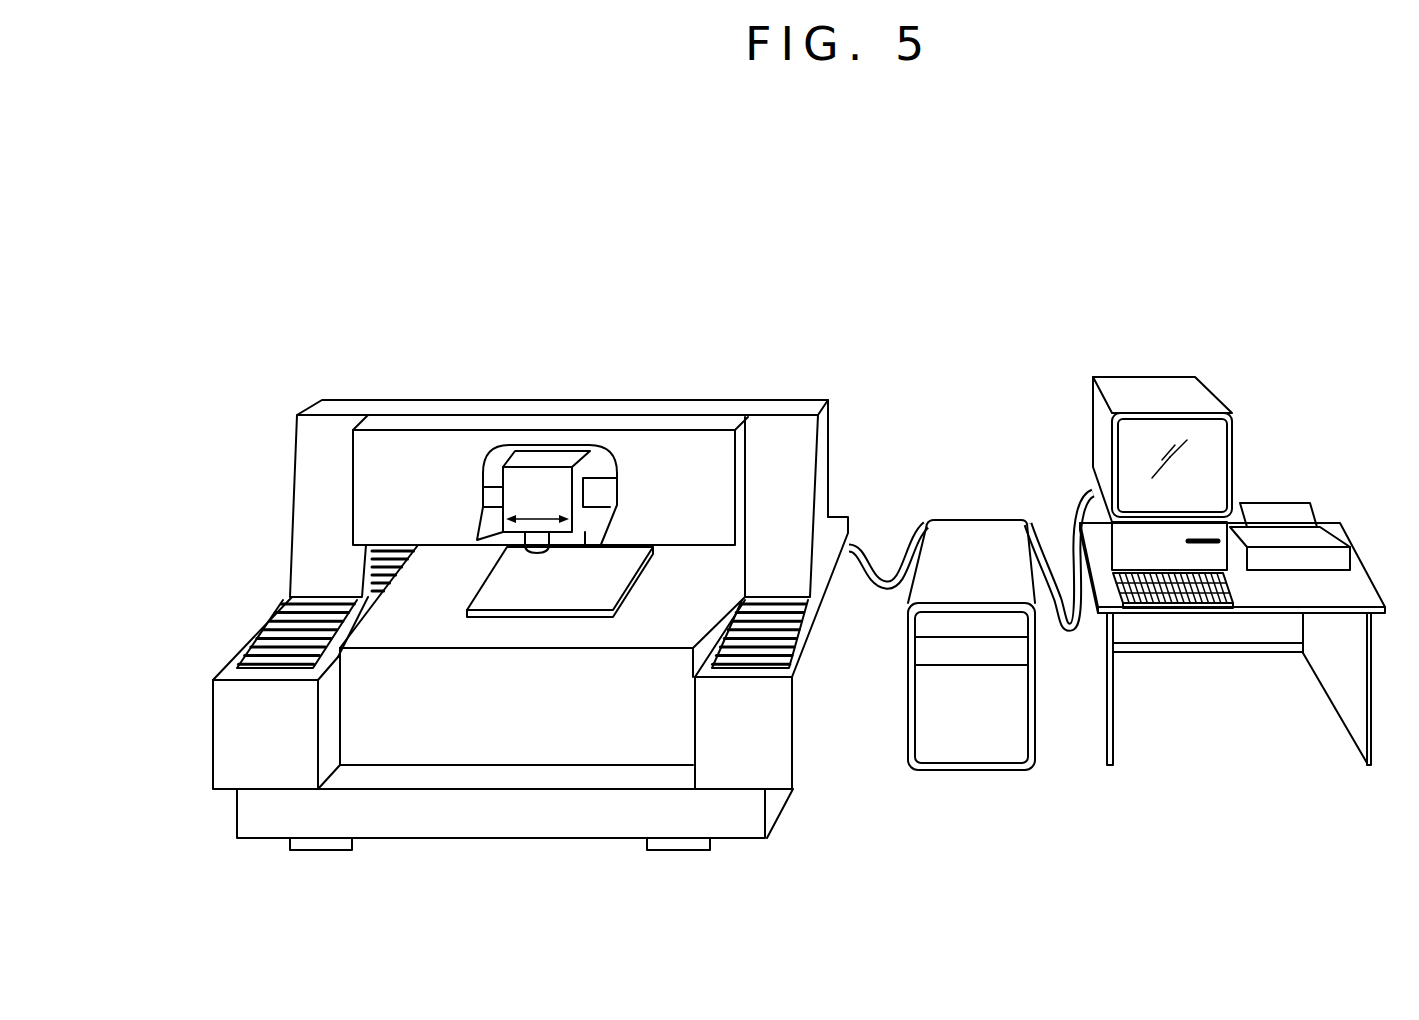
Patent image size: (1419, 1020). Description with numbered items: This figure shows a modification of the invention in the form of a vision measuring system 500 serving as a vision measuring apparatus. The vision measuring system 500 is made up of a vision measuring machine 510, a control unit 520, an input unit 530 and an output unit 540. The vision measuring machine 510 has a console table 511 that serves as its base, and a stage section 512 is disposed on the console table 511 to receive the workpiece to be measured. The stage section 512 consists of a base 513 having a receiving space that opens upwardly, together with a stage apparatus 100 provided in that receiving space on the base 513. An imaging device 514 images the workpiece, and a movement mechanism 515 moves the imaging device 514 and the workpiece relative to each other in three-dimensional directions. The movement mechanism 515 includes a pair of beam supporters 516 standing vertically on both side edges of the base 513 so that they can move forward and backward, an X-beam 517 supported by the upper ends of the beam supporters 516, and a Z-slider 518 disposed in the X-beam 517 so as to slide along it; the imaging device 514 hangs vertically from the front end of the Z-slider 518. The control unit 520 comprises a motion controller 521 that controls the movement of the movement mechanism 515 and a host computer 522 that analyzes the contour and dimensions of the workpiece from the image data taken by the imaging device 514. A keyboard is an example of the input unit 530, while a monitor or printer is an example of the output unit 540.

The vision measuring system 500 is at (1350, 401).
The vision measuring machine 510 is at (669, 308).
The console table 511 is at (548, 823).
The stage section 512 is at (228, 537).
The base 513 is at (250, 637).
The stage apparatus 100 is at (380, 622).
The imaging device 514 is at (533, 546).
The movement mechanism 515 is at (262, 412).
The beam supporter 516 is at (307, 455).
The X-beam 517 is at (601, 487).
The Z-slider 518 is at (542, 480).
The control unit 520 is at (1132, 838).
The motion controller 521 is at (996, 758).
The host computer 522 is at (1128, 548).
The input unit 530 is at (1207, 600).
The output unit 540 is at (1213, 468).